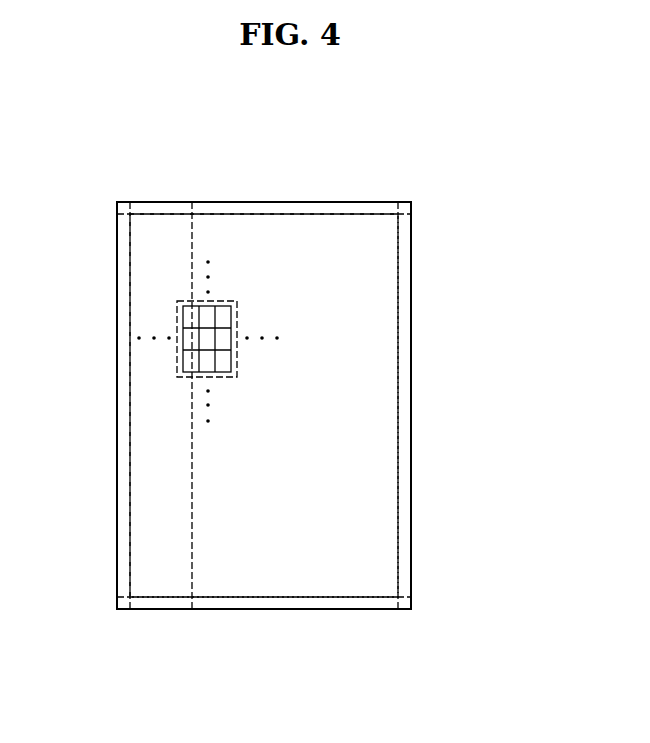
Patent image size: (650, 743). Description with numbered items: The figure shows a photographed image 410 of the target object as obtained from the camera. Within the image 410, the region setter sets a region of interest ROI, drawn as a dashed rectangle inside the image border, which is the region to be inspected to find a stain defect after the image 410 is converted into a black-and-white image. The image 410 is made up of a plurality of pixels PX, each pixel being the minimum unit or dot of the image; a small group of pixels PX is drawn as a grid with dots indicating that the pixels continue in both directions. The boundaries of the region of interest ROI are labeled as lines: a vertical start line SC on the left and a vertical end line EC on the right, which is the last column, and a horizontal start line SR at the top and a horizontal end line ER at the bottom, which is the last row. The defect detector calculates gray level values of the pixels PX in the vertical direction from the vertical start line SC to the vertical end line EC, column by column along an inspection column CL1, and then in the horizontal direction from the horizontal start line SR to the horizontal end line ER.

The image 410 is at (227, 202).
The region of interest ROI is at (323, 379).
The horizontal start line SR is at (411, 213).
The horizontal end line ER is at (405, 598).
The vertical start line SC is at (129, 603).
The vertical end line EC is at (405, 605).
The inspection column CL1 is at (192, 580).
The pixels PX is at (178, 323).